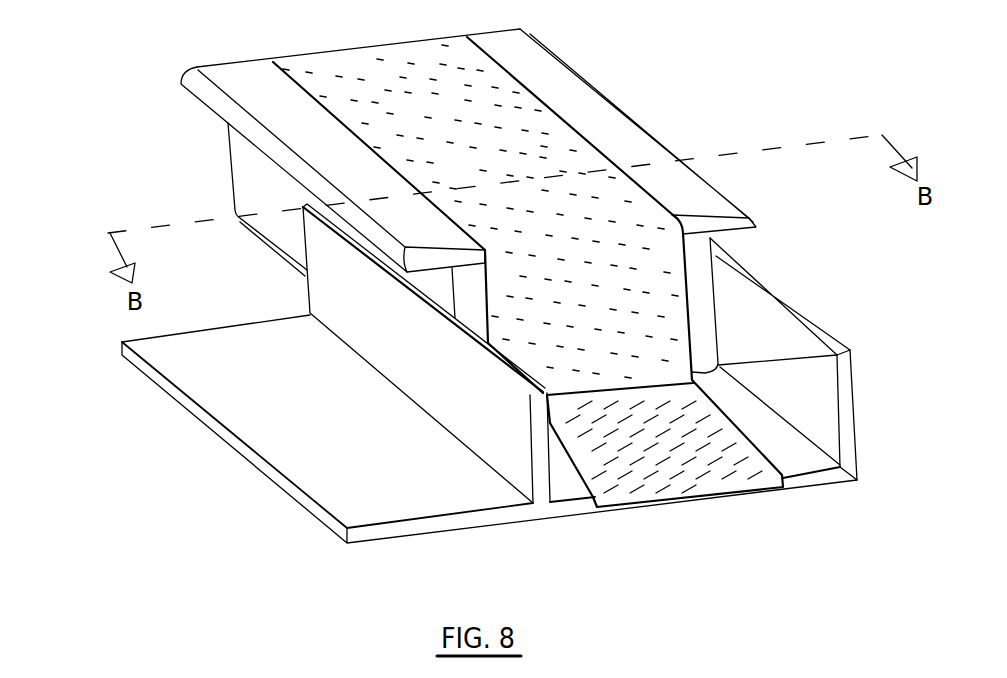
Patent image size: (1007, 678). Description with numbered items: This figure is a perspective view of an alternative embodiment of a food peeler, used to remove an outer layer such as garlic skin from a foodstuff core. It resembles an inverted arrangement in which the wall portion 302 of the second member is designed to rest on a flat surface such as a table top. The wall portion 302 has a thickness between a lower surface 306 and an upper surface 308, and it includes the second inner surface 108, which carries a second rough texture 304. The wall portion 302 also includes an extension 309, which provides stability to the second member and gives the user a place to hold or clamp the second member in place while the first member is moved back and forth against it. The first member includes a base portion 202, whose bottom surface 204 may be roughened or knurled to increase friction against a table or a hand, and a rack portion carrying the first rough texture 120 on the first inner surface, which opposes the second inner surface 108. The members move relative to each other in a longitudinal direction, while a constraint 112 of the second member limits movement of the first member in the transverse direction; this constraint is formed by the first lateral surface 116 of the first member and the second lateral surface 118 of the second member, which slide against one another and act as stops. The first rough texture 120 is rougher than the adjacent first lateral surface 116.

The second inner surface 108 is at (560, 488).
The constraint 112 is at (803, 327).
The first lateral surface 116 is at (243, 180).
The second lateral surface 118 is at (822, 394).
The first rough texture 120 is at (545, 157).
The base portion 202 is at (750, 220).
The bottom surface 204 is at (553, 93).
The wall portion 302 is at (350, 535).
The second rough texture 304 is at (655, 468).
The lower surface 306 is at (455, 533).
The upper surface 308 is at (507, 498).
The extension 309 is at (253, 397).